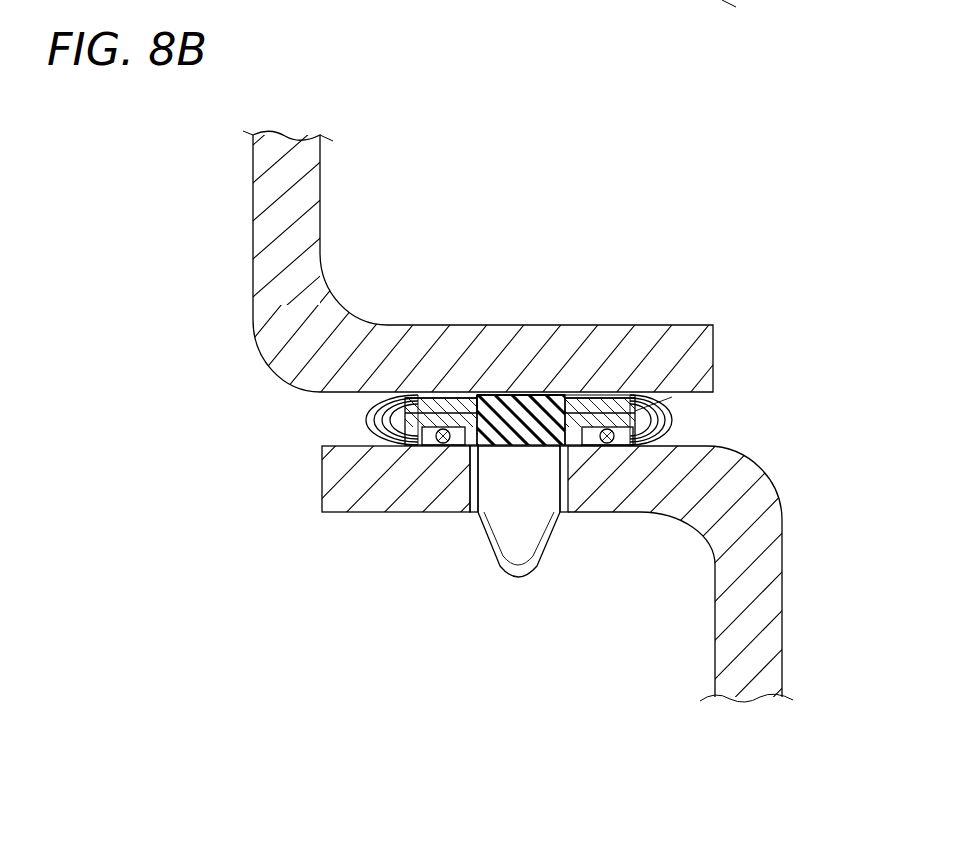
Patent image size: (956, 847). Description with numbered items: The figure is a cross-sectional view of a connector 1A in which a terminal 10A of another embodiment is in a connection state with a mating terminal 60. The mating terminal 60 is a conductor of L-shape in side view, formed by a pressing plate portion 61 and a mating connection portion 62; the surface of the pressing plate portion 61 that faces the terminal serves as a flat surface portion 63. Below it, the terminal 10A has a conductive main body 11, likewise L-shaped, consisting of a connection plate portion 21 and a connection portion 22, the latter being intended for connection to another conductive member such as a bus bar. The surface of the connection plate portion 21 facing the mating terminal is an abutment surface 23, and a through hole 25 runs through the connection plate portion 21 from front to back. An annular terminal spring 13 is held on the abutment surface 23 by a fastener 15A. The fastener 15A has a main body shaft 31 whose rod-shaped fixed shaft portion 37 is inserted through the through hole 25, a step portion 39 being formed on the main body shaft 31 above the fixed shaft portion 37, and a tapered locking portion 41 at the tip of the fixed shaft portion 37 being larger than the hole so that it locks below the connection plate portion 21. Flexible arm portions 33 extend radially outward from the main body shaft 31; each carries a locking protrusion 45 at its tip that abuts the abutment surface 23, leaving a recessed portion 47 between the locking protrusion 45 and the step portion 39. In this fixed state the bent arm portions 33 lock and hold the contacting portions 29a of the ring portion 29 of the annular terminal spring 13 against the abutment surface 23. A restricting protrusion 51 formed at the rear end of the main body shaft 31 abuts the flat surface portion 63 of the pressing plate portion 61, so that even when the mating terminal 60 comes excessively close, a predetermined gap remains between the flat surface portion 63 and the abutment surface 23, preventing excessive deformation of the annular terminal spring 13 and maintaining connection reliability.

The connector 1A is at (478, 420).
The terminal 10A is at (482, 420).
The conductive main body 11 is at (790, 518).
The annular terminal spring 13 is at (684, 393).
The fastener 15A is at (480, 384).
The connection plate portion 21 is at (340, 503).
The connection portion 22 is at (755, 652).
The abutment surface 23 is at (343, 447).
The through hole 25 is at (486, 514).
The ring portion 29 is at (690, 415).
The contacting portions 29a is at (420, 447).
The main body shaft 31 is at (553, 412).
The arm portions 33 is at (437, 398).
The fixed shaft portion 37 is at (572, 513).
The step portion 39 is at (519, 578).
The locking portion 41 is at (542, 565).
The locking protrusion 45 is at (405, 447).
The recessed portion 47 is at (447, 447).
The restricting protrusion 51 is at (508, 412).
The mating terminal 60 is at (465, 420).
The pressing plate portion 61 is at (705, 355).
The mating connection portion 62 is at (268, 192).
The flat surface portion 63 is at (690, 398).